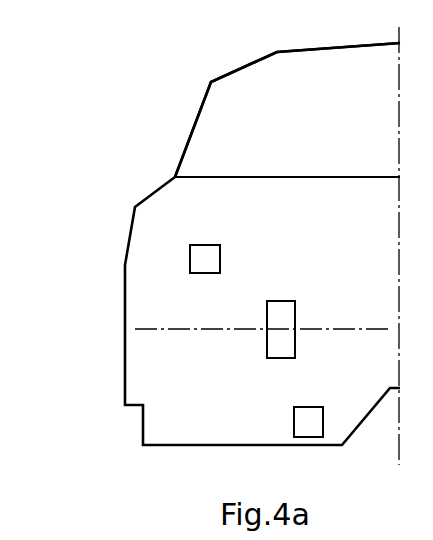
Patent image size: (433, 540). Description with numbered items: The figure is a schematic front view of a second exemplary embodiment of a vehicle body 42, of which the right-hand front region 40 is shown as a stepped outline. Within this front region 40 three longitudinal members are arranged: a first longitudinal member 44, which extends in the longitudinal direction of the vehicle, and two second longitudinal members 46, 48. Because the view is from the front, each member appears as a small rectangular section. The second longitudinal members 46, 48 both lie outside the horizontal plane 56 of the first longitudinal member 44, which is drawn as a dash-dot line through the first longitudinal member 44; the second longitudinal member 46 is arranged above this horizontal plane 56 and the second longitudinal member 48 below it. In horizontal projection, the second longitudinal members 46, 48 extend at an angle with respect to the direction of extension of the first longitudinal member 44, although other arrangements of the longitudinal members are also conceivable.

The right-hand front region 40 is at (102, 300).
The vehicle body 42 is at (170, 73).
The first longitudinal member 44 is at (285, 308).
The second longitudinal member 46 is at (210, 248).
The second longitudinal member 48 is at (313, 413).
The horizontal plane 56 is at (190, 332).